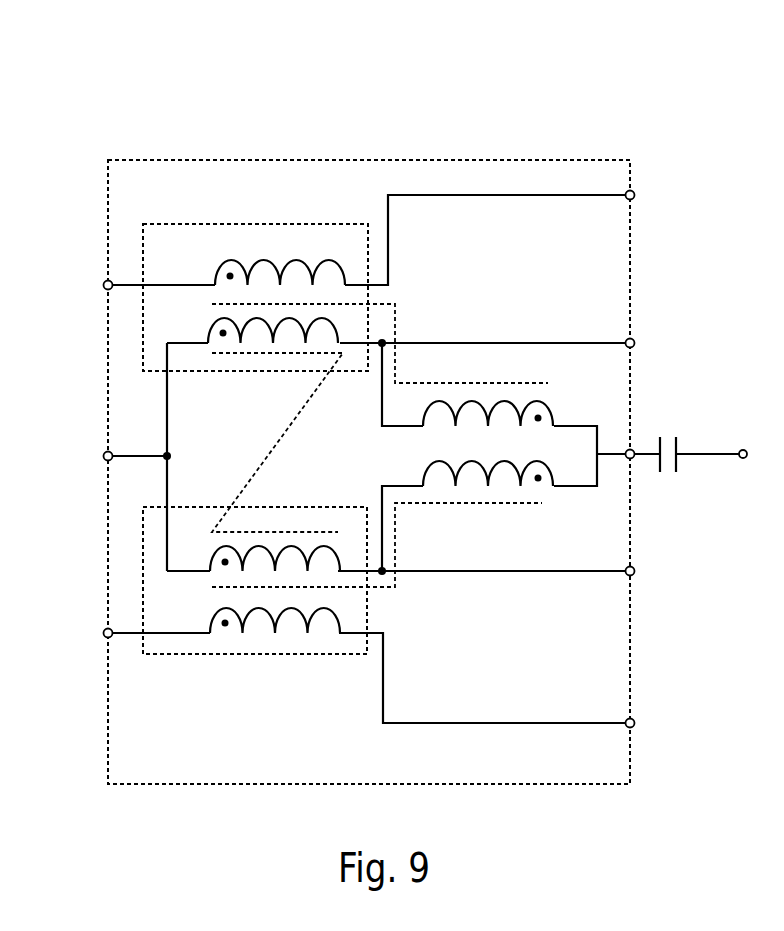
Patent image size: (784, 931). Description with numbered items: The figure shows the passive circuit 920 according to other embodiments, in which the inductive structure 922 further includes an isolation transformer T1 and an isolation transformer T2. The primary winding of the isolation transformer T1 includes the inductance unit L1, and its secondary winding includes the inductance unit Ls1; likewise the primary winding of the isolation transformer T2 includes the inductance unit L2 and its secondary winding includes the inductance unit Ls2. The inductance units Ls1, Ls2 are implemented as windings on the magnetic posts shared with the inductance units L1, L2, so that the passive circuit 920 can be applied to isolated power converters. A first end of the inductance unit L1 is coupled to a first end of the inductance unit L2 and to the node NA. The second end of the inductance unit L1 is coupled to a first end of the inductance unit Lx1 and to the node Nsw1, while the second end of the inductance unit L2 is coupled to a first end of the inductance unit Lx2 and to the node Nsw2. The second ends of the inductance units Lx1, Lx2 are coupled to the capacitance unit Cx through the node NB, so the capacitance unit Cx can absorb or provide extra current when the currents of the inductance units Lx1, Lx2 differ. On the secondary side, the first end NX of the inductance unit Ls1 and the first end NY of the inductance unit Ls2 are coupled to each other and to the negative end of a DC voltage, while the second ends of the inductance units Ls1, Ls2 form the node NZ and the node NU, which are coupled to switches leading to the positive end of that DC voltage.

The passive circuit 920 is at (121, 33).
The inductive structure 922 is at (468, 158).
The isolation transformer T1 is at (300, 224).
The isolation transformer T2 is at (233, 654).
The inductance unit Ls1 is at (256, 268).
The inductance unit L1 is at (253, 327).
The inductance unit L2 is at (257, 552).
The inductance unit Ls2 is at (249, 617).
The inductance unit Lx1 is at (487, 403).
The inductance unit Lx2 is at (568, 487).
The capacitance unit Cx is at (688, 468).
The first end of the inductance unit Ls1 NX is at (105, 288).
The node NA is at (105, 459).
The first end of the inductance unit Ls2 NY is at (105, 637).
The node NZ is at (634, 192).
The node Nsw1 is at (698, 318).
The node NB is at (634, 450).
The node Nsw2 is at (634, 568).
The node NU is at (634, 720).